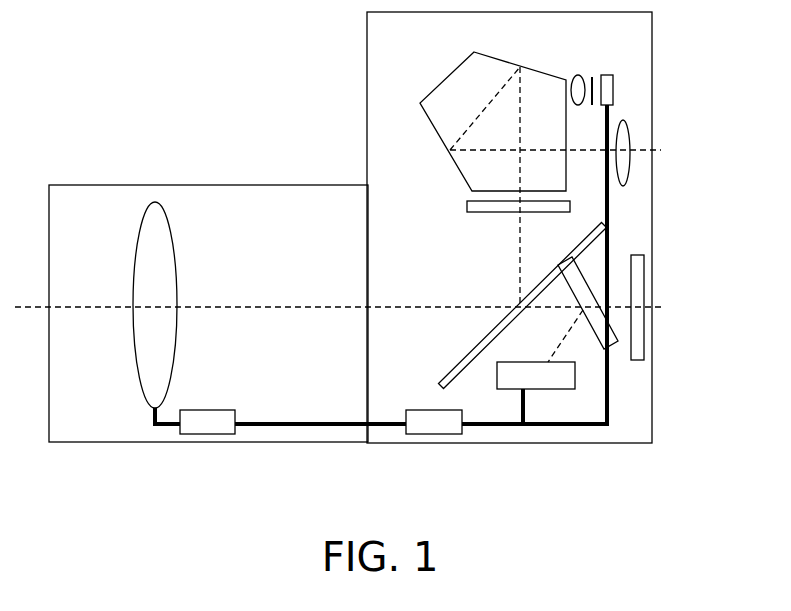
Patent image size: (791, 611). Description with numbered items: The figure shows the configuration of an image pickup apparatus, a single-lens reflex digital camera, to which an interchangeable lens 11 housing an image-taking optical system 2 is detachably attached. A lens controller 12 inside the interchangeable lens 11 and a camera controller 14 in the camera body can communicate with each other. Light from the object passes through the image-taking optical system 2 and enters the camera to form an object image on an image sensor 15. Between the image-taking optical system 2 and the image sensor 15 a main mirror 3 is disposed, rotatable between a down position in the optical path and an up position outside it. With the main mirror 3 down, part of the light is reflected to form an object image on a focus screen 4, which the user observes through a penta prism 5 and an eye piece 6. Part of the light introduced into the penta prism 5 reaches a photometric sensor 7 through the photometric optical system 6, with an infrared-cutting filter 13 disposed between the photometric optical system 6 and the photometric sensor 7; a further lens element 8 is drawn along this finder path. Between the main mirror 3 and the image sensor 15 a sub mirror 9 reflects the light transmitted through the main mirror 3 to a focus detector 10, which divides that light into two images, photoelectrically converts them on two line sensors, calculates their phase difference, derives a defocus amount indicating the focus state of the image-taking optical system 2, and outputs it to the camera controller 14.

The image-taking optical system 2 is at (155, 202).
The main mirror 3 is at (487, 335).
The focus screen 4 is at (467, 207).
The penta prism 5 is at (446, 75).
The eye piece 6 is at (577, 75).
The photometric sensor 7 is at (613, 80).
The eyepiece lens 8 is at (630, 133).
The sub mirror 9 is at (607, 288).
The focus detector 10 is at (567, 389).
The interchangeable lens 11 is at (253, 185).
The lens controller 12 is at (195, 434).
The infrared-cutting filter 13 is at (591, 77).
The camera controller 14 is at (428, 434).
The image sensor 15 is at (644, 302).